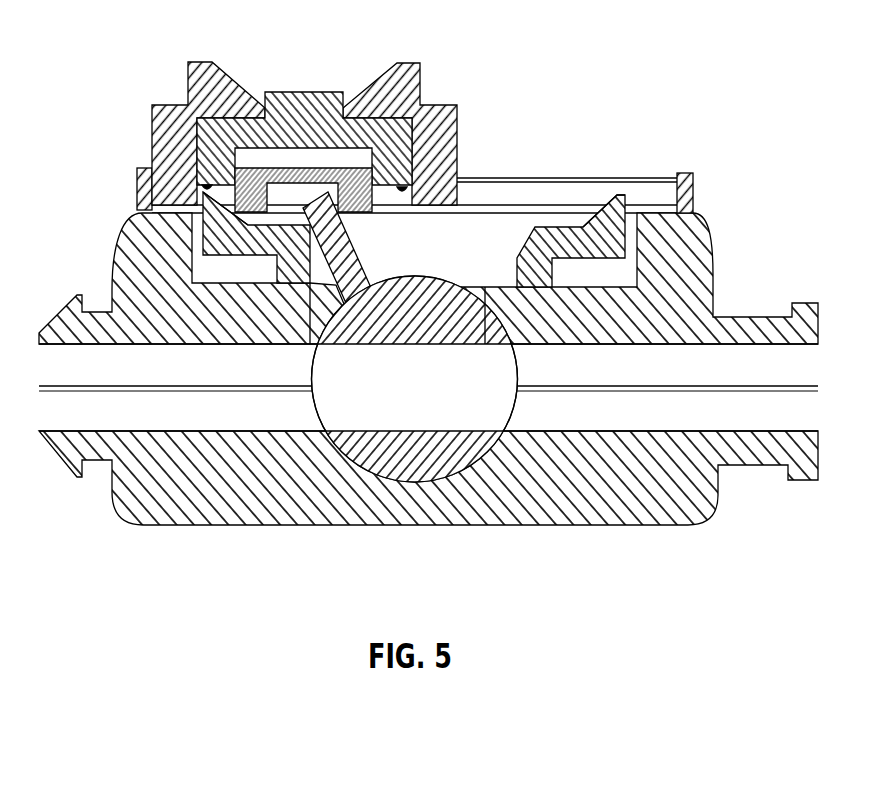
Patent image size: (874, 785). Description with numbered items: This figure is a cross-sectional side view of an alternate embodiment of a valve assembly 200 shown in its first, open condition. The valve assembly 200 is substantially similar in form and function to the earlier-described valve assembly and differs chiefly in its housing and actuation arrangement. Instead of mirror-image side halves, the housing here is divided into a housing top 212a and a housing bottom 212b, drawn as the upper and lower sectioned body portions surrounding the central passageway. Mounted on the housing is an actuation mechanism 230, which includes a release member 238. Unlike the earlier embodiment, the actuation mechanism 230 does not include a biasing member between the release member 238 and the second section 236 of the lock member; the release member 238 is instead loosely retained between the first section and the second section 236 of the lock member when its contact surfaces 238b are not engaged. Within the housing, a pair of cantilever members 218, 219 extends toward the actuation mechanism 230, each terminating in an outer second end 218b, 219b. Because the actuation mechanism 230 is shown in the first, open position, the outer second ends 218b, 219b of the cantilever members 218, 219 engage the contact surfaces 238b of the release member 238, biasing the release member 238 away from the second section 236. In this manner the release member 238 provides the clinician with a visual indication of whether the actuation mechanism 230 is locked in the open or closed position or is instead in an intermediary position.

The valve assembly 200 is at (454, 302).
The housing top 212a is at (776, 314).
The housing bottom 212b is at (608, 528).
The cantilever member 218 is at (212, 213).
The outer second end of cantilever member 218b is at (247, 237).
The cantilever member 219 is at (595, 247).
The outer second end of cantilever member 219b is at (612, 220).
The actuation mechanism 230 is at (380, 135).
The second section of lock member 236 is at (372, 180).
The release member 238 is at (317, 92).
The contact surfaces 238b is at (200, 184).